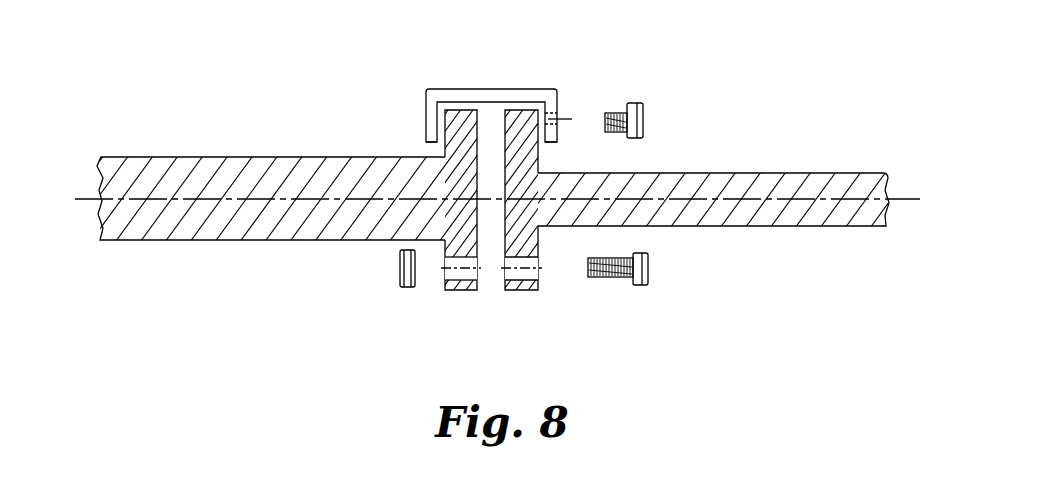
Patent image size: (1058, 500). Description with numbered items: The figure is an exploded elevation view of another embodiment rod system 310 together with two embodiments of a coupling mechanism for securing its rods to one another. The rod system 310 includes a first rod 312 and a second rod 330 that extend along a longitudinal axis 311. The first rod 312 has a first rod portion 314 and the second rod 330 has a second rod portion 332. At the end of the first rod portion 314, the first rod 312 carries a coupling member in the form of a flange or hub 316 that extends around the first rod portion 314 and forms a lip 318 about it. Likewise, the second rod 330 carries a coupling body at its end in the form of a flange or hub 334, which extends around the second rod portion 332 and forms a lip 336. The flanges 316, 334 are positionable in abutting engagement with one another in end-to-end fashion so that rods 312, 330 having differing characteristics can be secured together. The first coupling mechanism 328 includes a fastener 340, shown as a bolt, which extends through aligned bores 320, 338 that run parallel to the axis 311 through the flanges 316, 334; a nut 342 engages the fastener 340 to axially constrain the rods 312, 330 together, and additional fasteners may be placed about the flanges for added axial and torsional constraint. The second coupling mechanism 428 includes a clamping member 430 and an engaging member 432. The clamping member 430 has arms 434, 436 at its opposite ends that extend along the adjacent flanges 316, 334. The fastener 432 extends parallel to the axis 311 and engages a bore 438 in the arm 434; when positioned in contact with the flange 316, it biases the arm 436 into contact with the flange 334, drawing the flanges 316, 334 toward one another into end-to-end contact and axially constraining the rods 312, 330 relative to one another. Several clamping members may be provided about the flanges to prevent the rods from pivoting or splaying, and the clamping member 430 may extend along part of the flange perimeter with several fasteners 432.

The rod system 310 is at (682, 312).
The longitudinal axis 311 is at (845, 198).
The first rod 312 is at (737, 174).
The first rod portion 314 is at (760, 213).
The flange or hub 316 is at (518, 168).
The lip 318 is at (538, 247).
The bore 320 is at (527, 290).
The coupling mechanism 328 is at (505, 323).
The second rod 330 is at (240, 157).
The second rod portion 332 is at (225, 212).
The flange or hub 334 is at (445, 170).
The lip 336 is at (437, 290).
The bore 338 is at (473, 290).
The fastener 340 is at (628, 278).
The nut 342 is at (386, 298).
The coupling mechanism 428 is at (537, 83).
The clamping member 430 is at (462, 89).
The engaging member 432 is at (659, 109).
The arm 434 is at (552, 147).
The arm 436 is at (426, 142).
The bore 438 is at (558, 113).